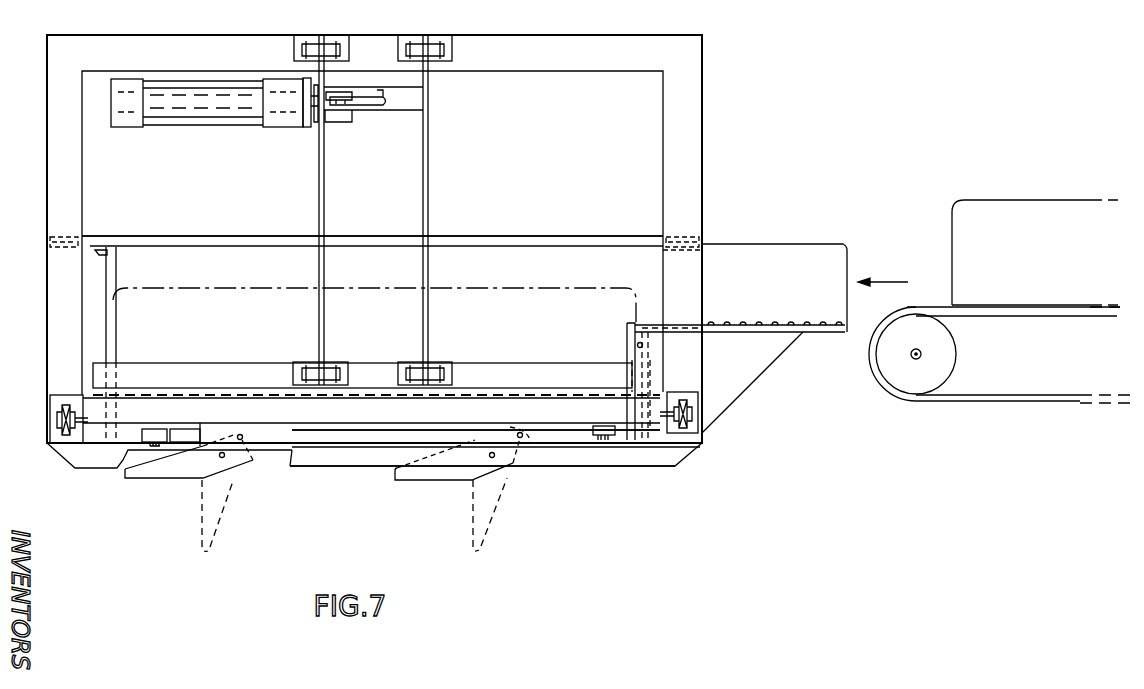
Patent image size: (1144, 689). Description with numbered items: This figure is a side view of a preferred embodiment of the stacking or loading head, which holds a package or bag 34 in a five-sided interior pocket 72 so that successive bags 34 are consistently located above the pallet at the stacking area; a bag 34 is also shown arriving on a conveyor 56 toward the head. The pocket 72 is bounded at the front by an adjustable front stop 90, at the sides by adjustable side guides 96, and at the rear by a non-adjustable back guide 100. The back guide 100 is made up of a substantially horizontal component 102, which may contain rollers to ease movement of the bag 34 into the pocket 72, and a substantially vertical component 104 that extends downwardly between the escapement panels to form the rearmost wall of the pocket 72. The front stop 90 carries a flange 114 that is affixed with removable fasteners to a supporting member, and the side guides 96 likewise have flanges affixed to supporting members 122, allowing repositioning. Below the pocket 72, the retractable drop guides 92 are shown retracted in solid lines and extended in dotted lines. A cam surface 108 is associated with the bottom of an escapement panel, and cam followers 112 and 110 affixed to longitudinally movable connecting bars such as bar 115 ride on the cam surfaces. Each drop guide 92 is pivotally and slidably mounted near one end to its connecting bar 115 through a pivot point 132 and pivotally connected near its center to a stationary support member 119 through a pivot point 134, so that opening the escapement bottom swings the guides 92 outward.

The package or bag 34 is at (734, 265).
The conveyor belt 56 is at (1040, 357).
The interior pocket 72 is at (520, 273).
The adjustable front stop 90 is at (107, 283).
The left retractable drop guide 92 is at (168, 467).
The adjustable side guide 96 is at (135, 247).
The non-adjustable back guide 100 is at (710, 335).
The substantially horizontal component 102 is at (818, 333).
The substantially vertical component 104 is at (642, 347).
The cam surface 108 is at (117, 430).
The cam follower 110 is at (605, 436).
The cam follower 112 is at (147, 442).
The flange 114 is at (95, 252).
The connecting bar 115 is at (348, 438).
The support member 119 is at (320, 455).
The supporting member 122 is at (473, 236).
The pivot point 132 is at (241, 440).
The pivot point 134 is at (222, 455).